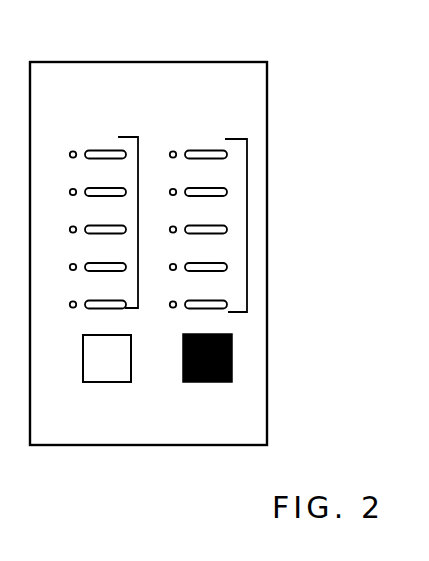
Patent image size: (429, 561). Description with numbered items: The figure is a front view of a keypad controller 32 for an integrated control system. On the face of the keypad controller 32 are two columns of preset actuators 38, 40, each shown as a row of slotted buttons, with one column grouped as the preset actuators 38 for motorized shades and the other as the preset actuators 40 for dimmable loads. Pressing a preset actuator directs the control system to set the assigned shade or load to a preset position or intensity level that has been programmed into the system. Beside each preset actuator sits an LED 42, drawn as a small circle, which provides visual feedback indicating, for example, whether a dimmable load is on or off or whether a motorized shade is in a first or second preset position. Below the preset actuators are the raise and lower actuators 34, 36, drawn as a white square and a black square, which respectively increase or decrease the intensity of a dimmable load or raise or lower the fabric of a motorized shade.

The keypad controller 32 is at (247, 76).
The raise actuator 34 is at (106, 390).
The lower actuator 36 is at (238, 358).
The preset actuators 38 is at (248, 227).
The preset actuators 40 is at (144, 165).
The LED 42 is at (68, 153).